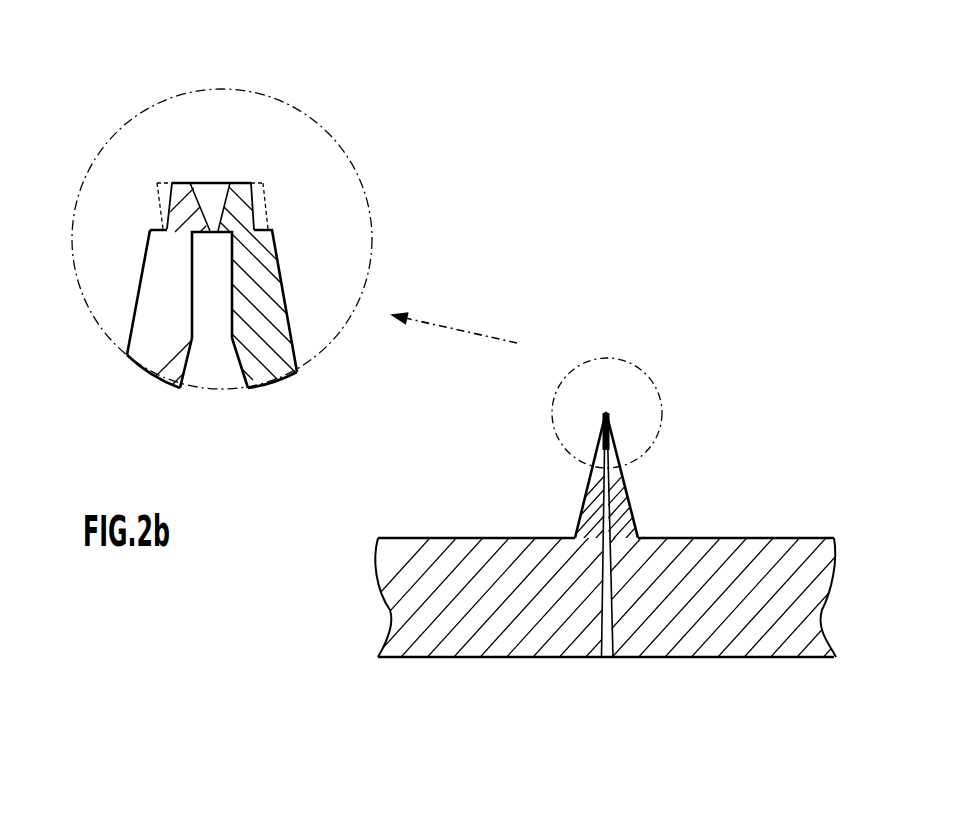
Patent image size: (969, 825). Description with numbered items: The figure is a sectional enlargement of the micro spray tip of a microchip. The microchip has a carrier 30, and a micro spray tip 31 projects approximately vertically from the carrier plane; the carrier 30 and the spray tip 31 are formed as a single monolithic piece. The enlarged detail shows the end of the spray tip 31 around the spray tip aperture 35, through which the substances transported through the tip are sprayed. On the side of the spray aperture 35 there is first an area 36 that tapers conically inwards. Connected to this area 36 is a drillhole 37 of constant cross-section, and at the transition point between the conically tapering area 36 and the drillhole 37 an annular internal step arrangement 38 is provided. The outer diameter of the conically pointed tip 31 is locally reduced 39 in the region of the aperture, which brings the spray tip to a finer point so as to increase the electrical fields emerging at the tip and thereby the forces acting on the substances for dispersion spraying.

The carrier 30 is at (397, 562).
The micro spray tip 31 is at (631, 500).
The spray tip aperture 35 is at (239, 141).
The conically tapering area 36 is at (194, 204).
The drillhole 37 is at (210, 288).
The annular internal step arrangement 38 is at (204, 250).
The local reduction of outer diameter 39 is at (153, 218).